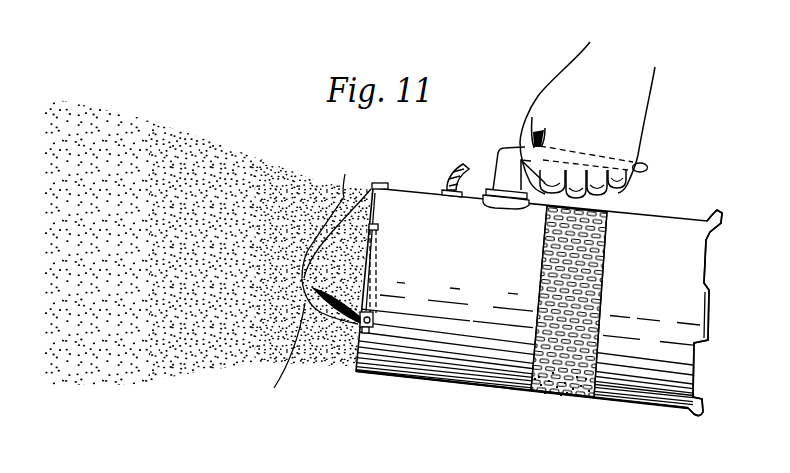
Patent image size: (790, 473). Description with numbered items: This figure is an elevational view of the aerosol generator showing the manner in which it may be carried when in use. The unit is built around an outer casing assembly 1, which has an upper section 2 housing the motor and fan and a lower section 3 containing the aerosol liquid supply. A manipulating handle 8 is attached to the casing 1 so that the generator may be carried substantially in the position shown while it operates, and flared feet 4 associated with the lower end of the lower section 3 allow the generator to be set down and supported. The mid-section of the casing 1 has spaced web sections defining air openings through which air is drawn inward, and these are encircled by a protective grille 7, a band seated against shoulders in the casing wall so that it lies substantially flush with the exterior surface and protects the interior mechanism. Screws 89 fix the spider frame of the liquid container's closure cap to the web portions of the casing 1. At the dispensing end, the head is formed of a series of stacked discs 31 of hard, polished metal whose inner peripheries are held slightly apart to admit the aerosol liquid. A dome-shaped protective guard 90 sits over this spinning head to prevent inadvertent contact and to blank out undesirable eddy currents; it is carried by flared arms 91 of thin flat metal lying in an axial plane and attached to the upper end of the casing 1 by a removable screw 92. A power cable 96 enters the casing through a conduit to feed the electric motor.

The outer casing assembly 1 is at (510, 395).
The upper section 2 is at (462, 382).
The lower section 3 is at (643, 403).
The flared feet 4 is at (722, 214).
The protective grille 7 is at (560, 392).
The manipulating handle 8 is at (508, 155).
The stacked discs 31 is at (377, 243).
The screws 89 is at (575, 306).
The dome-shaped protective guard 90 is at (309, 346).
The flared arms 91 is at (210, 240).
The removable screw 92 is at (378, 183).
The power cable 96 is at (452, 189).